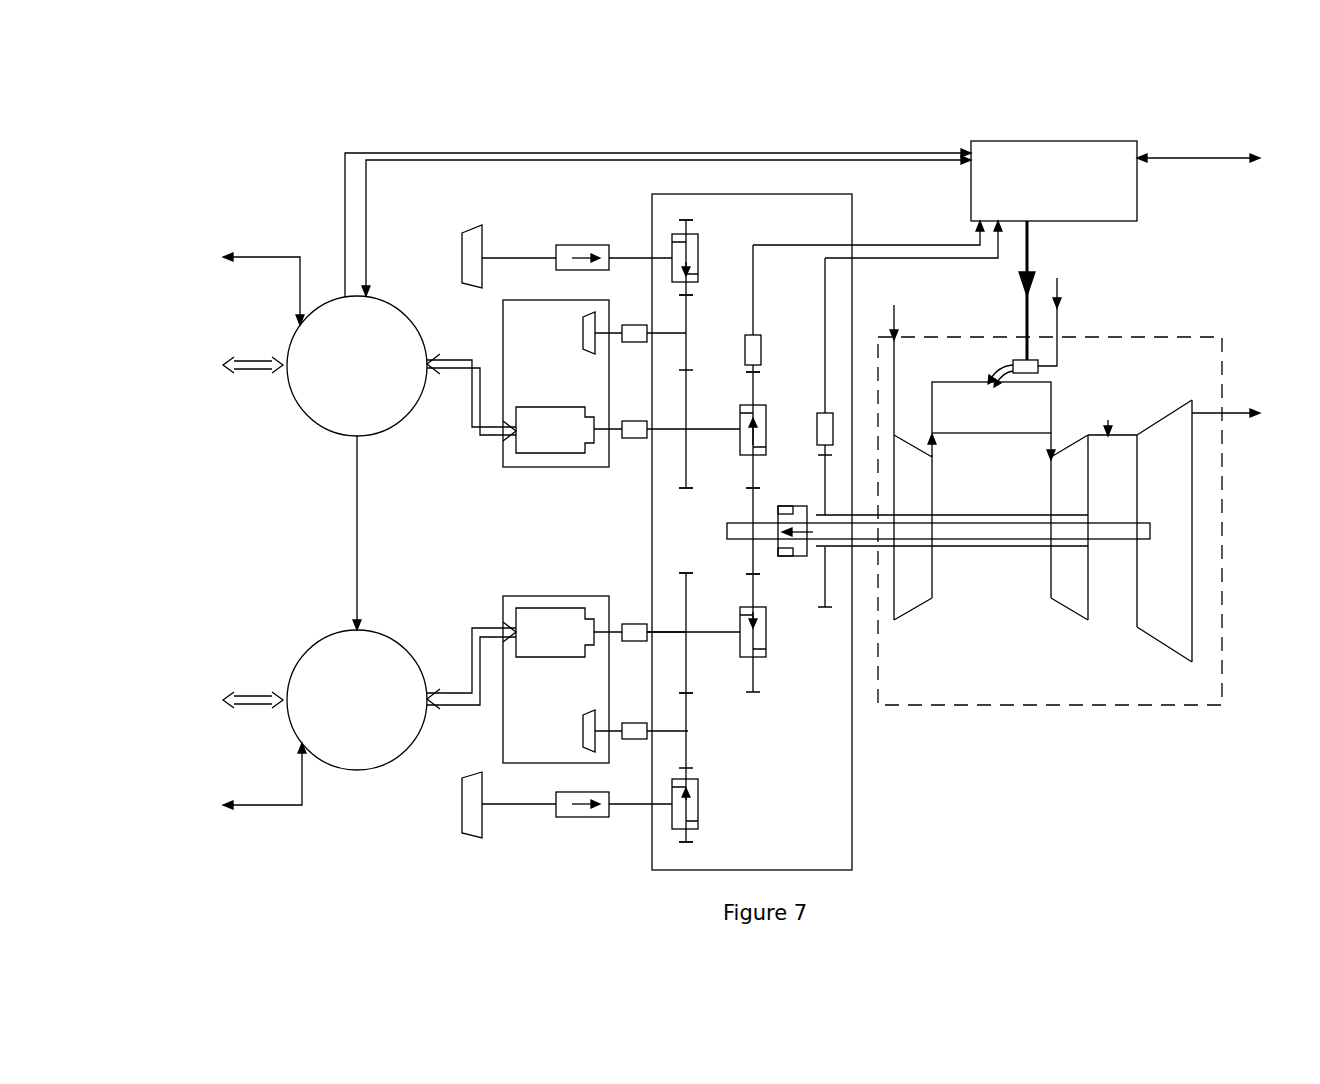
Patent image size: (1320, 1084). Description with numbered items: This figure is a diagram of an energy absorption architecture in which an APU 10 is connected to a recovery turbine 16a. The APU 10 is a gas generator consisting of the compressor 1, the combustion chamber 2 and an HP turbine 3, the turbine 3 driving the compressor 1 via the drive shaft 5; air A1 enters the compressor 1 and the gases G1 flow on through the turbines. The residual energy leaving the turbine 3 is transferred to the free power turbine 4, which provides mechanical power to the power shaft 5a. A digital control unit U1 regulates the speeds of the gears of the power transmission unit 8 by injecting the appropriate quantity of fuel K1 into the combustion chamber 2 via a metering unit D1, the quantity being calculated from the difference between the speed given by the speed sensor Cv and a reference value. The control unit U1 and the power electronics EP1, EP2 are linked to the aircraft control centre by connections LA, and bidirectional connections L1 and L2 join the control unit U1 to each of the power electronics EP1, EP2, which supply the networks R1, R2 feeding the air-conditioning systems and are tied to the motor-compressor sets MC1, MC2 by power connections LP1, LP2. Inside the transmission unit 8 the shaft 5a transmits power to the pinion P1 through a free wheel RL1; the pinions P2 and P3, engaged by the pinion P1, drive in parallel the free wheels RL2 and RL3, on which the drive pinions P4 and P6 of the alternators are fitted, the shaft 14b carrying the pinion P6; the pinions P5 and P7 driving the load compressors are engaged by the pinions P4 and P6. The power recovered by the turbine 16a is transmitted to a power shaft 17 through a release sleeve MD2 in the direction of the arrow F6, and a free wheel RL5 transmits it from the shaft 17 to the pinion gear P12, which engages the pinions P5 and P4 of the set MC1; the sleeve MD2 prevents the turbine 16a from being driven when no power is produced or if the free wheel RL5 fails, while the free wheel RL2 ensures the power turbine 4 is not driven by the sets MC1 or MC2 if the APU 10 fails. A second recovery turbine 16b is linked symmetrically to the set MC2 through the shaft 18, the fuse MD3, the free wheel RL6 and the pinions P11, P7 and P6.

The compressor 1 is at (915, 598).
The combustion chamber 2 is at (932, 402).
The HP turbine 3 is at (1062, 598).
The power turbine 4 is at (1150, 630).
The drive shaft 5 is at (1005, 546).
The power shaft 5a is at (1005, 530).
The power transmission unit 8 is at (857, 196).
The APU 10 is at (1192, 355).
The shaft of drive pinion P6 14b is at (672, 640).
The recovery turbine 16a is at (470, 228).
The second recovery turbine 16b is at (470, 775).
The power shaft 17 is at (548, 256).
The shaft 18 is at (548, 804).
The release sleeve MD2 is at (587, 227).
The release sleeve MD3 is at (592, 818).
The arrow F6 is at (580, 265).
The motor-compressor set MC1 is at (547, 468).
The motor-compressor set MC2 is at (537, 594).
The power electronics EP1 is at (357, 366).
The power electronics EP2 is at (357, 700).
The power connection LP1 is at (450, 360).
The power connection LP2 is at (478, 625).
The bidirectional connection L1 is at (468, 161).
The bidirectional connection L2 is at (468, 153).
The aircraft connections LA is at (737, 482).
The network R1 is at (220, 386).
The network R2 is at (220, 721).
The digital control unit U1 is at (1138, 140).
The metering unit D1 is at (1010, 364).
The fuel K1 is at (1055, 308).
The air inlet A1 is at (950, 452).
The gas / power output G1 is at (1052, 450).
The speed sensor Cv is at (762, 338).
The pinion P1 is at (752, 510).
The pinion P2 is at (755, 386).
The pinion P3 is at (756, 583).
The drive pinion P4 is at (688, 470).
The pinion P5 is at (690, 318).
The drive pinion P6 is at (692, 628).
The pinion P7 is at (688, 713).
The pinion P11 is at (690, 840).
The pinion gear P12 is at (692, 224).
The free wheel RL1 is at (805, 505).
The free wheel RL2 is at (740, 407).
The free wheel RL3 is at (767, 657).
The free wheel RL5 is at (700, 245).
The free wheel RL6 is at (700, 790).